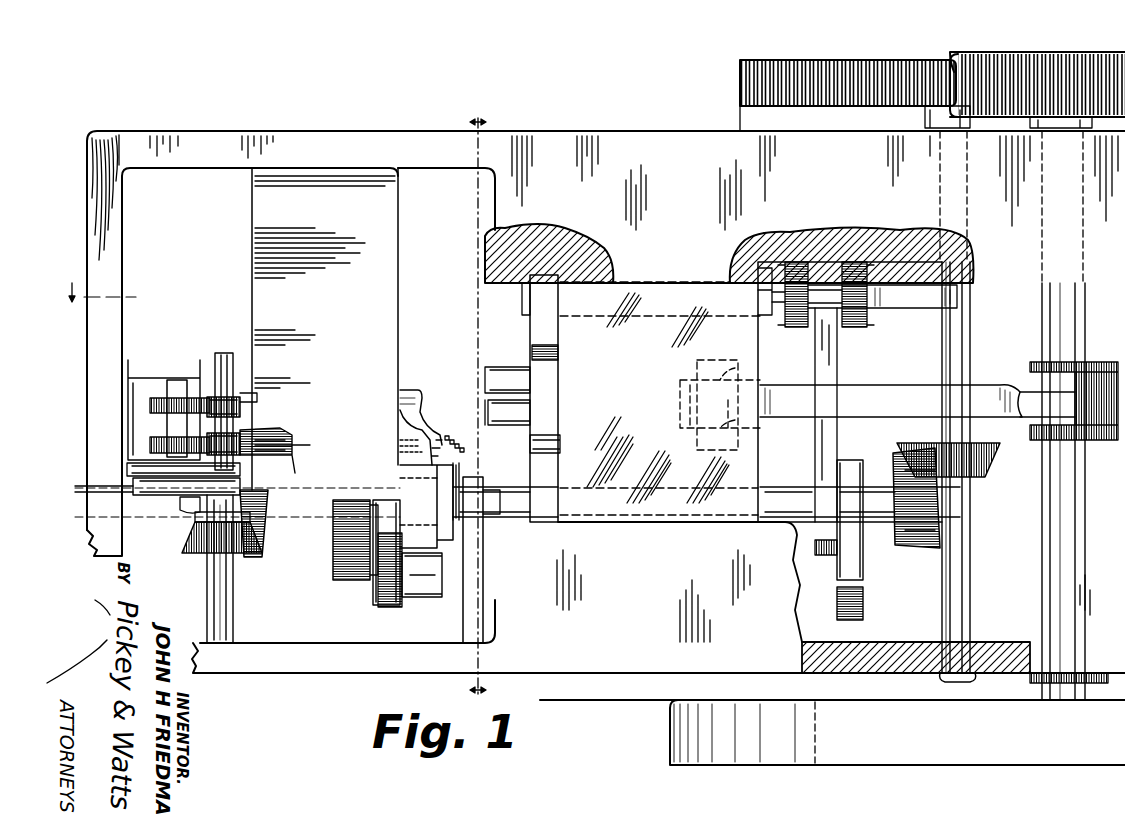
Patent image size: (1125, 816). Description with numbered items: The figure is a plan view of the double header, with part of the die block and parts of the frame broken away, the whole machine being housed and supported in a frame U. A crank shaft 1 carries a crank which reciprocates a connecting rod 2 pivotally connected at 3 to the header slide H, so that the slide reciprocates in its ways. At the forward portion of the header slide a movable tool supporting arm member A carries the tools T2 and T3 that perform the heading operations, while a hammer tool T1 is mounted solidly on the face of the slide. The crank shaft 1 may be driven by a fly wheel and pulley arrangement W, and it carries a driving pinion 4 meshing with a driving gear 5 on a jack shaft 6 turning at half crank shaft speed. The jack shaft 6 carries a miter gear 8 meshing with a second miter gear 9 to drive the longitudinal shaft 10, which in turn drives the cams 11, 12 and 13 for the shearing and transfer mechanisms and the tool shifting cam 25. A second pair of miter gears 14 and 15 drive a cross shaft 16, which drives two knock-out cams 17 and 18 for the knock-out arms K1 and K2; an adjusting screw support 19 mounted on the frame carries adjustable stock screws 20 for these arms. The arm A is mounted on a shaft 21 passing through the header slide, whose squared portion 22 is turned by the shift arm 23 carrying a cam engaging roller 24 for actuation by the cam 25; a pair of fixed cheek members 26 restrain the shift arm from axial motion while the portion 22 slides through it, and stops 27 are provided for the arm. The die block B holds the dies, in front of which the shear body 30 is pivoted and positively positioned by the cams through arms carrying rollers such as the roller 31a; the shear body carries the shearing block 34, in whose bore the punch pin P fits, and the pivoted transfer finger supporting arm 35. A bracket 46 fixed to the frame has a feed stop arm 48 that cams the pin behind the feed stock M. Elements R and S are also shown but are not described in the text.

The crank shaft 1 is at (1086, 334).
The connecting rod 2 is at (1002, 395).
The pivotal connection 3 is at (770, 365).
The driving pinion 4 is at (464, 407).
The driving gear 5 is at (872, 76).
The jack shaft 6 is at (972, 346).
The miter gear 8 is at (984, 468).
The second miter gear 9 is at (905, 537).
The longitudinal shaft 10 is at (505, 487).
The transfer finger actuating cam 11 is at (460, 468).
The shear cam 12 is at (396, 532).
The shear cam 13 is at (335, 570).
The miter gear 14 is at (262, 538).
The miter gear 15 is at (244, 555).
The cross shaft 16 is at (215, 592).
The knock-out cam 17 is at (257, 435).
The knock-out cam 18 is at (240, 395).
The adjusting screw support 19 is at (142, 388).
The adjustable stock screws 20 is at (160, 445).
The shaft 21 is at (850, 392).
The square or splined portion 22 is at (903, 300).
The shift arm 23 is at (847, 415).
The cam engaging roller 24 is at (858, 572).
The tool shifting cam 25 is at (860, 606).
The fixed cheek members 26 is at (829, 307).
The stops 27 is at (560, 352).
The shear body 30 is at (426, 506).
The roller 31a is at (390, 607).
The shearing block 34 is at (410, 455).
The transfer finger supporting arm 35 is at (405, 414).
The bracket 46 is at (473, 560).
The feed stop arm 48 is at (475, 520).
The knock-out arm K1 is at (215, 440).
The knock-out arm K2 is at (226, 398).
The hammer tool T1 is at (533, 444).
The heading tool T2 is at (490, 410).
The heading tool T3 is at (490, 372).
The tool supporting arm member A is at (541, 333).
The die block B is at (345, 308).
The header slide H is at (662, 400).
The punch pin P is at (462, 452).
The shaft R is at (160, 495).
The sleeve S is at (422, 593).
The stock M is at (78, 492).
The fly wheel and pulley arrangement W is at (968, 752).
The frame U is at (360, 131).